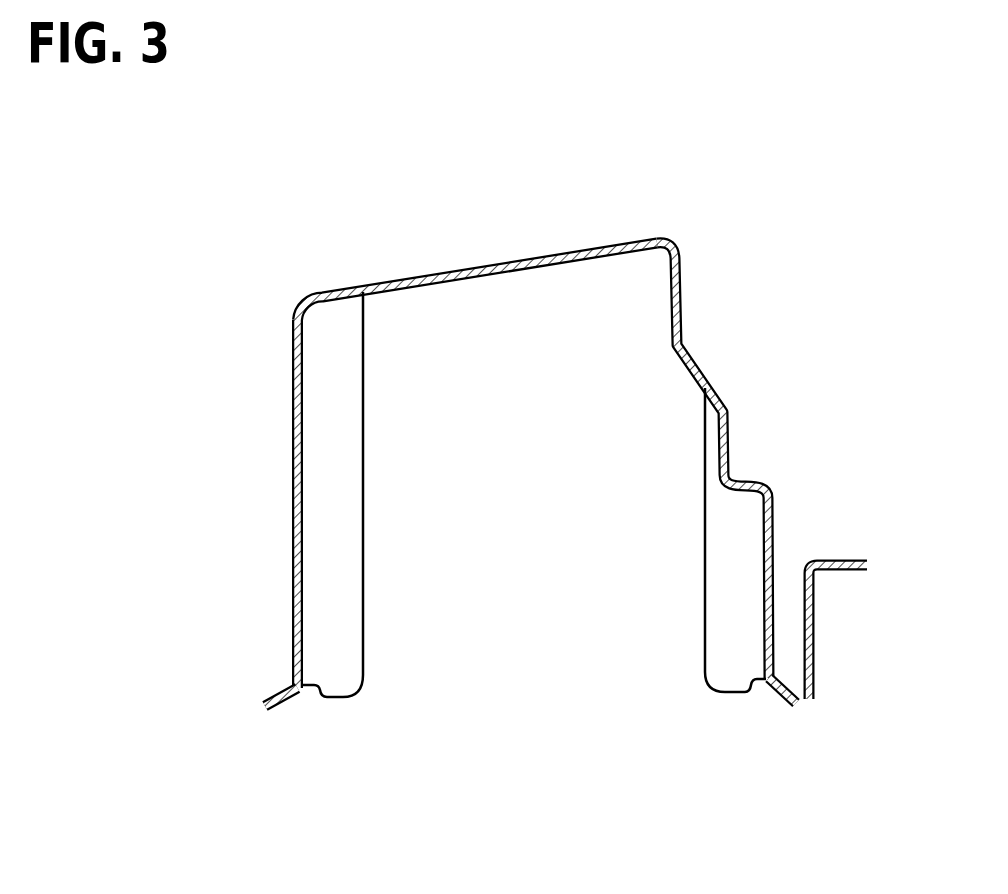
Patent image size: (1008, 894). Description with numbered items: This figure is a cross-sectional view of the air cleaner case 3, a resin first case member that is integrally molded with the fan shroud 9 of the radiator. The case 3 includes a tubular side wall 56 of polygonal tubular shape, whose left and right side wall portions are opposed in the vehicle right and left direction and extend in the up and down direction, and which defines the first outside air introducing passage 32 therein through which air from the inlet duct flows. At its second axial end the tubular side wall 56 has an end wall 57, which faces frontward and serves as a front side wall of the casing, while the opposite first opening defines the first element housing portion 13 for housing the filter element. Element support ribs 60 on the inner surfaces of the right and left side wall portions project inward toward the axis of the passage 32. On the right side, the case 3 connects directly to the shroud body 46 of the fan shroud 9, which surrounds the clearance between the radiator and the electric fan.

The air cleaner case 3 is at (500, 452).
The end wall 57 is at (490, 262).
The tubular side wall 56 is at (293, 491).
The element support ribs 60 is at (365, 605).
The first outside air introducing passage 32 is at (545, 496).
The first element housing portion 13 is at (540, 650).
The fan shroud 9 is at (863, 585).
The shroud body 46 is at (845, 560).